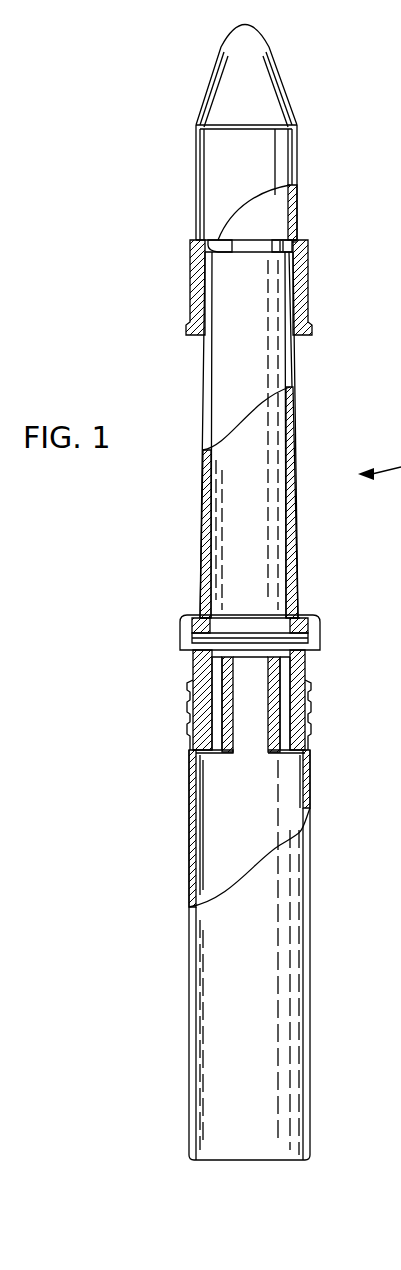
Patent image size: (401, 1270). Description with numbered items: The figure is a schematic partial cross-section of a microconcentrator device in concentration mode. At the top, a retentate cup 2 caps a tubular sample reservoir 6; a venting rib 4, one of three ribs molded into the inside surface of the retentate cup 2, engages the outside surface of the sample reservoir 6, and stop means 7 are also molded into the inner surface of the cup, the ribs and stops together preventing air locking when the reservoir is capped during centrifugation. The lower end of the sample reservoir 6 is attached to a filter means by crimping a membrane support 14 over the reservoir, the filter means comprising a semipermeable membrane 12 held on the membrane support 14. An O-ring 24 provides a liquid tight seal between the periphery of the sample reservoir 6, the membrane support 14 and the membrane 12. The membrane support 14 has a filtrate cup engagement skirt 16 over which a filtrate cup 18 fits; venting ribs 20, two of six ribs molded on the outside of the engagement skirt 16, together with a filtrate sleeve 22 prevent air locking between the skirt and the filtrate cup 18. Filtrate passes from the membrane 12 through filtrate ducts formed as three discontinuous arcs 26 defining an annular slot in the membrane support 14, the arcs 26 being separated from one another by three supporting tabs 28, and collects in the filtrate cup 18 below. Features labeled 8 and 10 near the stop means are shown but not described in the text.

The retentate cup 2 is at (210, 163).
The venting rib 4 is at (192, 290).
The sample reservoir 6 is at (222, 500).
The stop means 7 is at (212, 242).
The ring groove 8 is at (300, 250).
The ring 10 is at (298, 237).
The semipermeable membrane 12 is at (316, 640).
The membrane support 14 is at (182, 652).
The filtrate cup engagement skirt 16 is at (300, 724).
The filtrate cup 18 is at (296, 885).
The venting ribs 20 is at (190, 708).
The filtrate sleeve 22 is at (300, 754).
The O-ring 24 is at (196, 637).
The discontinuous arcs 26 is at (305, 622).
The supporting tabs 28 is at (200, 628).